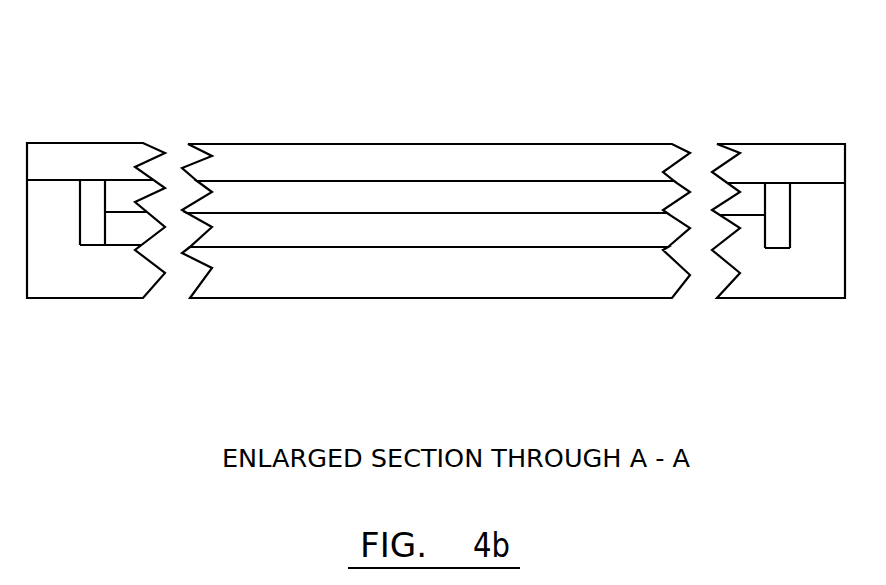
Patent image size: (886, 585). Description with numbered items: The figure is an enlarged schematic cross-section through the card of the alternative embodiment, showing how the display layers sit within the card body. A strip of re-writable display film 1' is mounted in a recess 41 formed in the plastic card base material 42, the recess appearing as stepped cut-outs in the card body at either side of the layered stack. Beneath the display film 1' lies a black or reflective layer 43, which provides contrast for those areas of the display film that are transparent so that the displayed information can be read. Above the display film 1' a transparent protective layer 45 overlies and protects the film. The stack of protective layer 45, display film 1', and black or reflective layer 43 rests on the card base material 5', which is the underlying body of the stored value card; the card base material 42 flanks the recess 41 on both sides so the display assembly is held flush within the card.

The recess 41 is at (82, 210).
The plastic card base material 42 is at (100, 277).
The black or reflective layer 43 is at (237, 230).
The strip of display film 1' is at (436, 116).
The protective layer 45 is at (310, 163).
The card base material 5' is at (436, 330).